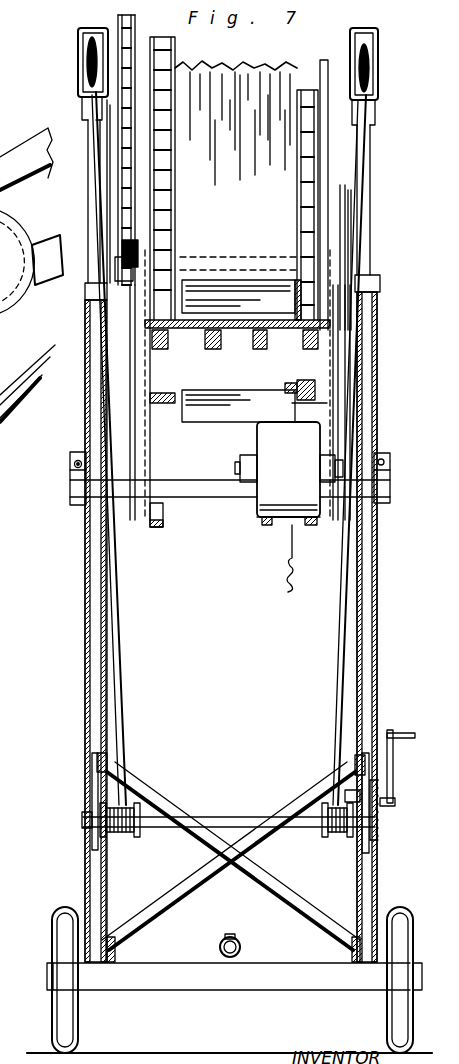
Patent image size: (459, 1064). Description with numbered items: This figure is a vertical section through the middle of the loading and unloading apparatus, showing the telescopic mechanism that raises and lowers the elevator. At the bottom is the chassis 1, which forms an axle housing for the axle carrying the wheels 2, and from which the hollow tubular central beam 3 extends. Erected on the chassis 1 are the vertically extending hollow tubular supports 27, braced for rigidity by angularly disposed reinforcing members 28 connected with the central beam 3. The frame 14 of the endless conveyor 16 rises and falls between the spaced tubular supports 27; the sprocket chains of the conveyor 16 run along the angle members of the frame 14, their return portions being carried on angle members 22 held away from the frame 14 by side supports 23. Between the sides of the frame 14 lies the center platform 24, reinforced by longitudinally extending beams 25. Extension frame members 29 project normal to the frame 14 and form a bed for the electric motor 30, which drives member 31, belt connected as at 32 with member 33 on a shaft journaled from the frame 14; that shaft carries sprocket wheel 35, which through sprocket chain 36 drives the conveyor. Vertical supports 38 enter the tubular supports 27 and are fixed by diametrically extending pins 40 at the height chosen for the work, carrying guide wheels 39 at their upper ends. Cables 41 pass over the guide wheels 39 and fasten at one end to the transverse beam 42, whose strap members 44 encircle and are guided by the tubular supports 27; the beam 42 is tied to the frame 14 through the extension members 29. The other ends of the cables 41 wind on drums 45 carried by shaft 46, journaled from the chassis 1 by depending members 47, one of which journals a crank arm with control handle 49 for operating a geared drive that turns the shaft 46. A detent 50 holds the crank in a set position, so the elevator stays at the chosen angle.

The chassis 1 is at (200, 980).
The wheels 2 is at (64, 910).
The central beam 3 is at (242, 947).
The frame 14 is at (178, 42).
The endless conveyor 16 is at (178, 216).
The angle members 22 is at (150, 405).
The side supports 23 is at (4, 425).
The center platform 24 is at (235, 372).
The longitudinally extending beams 25 is at (212, 350).
The vertically extending hollow tubular supports 27 is at (82, 663).
The reinforcing members 28 is at (190, 875).
The extension frame members 29 is at (353, 357).
The electric motor 30 is at (270, 488).
The member 31 is at (262, 528).
The belt connection 32 is at (345, 433).
The member 33 is at (384, 218).
The sprocket wheel 35 is at (138, 243).
The sprocket chain 36 is at (135, 145).
The vertical supports 38 is at (88, 178).
The guide wheels 39 is at (78, 52).
The pins 40 is at (85, 288).
The cables 41 is at (88, 137).
The transverse beam 42 is at (172, 482).
The strap members 44 is at (395, 442).
The drums 45 is at (140, 810).
The shaft 46 is at (228, 817).
The depending members 47 is at (92, 845).
The control handle 49 is at (406, 724).
The detent 50 is at (372, 785).